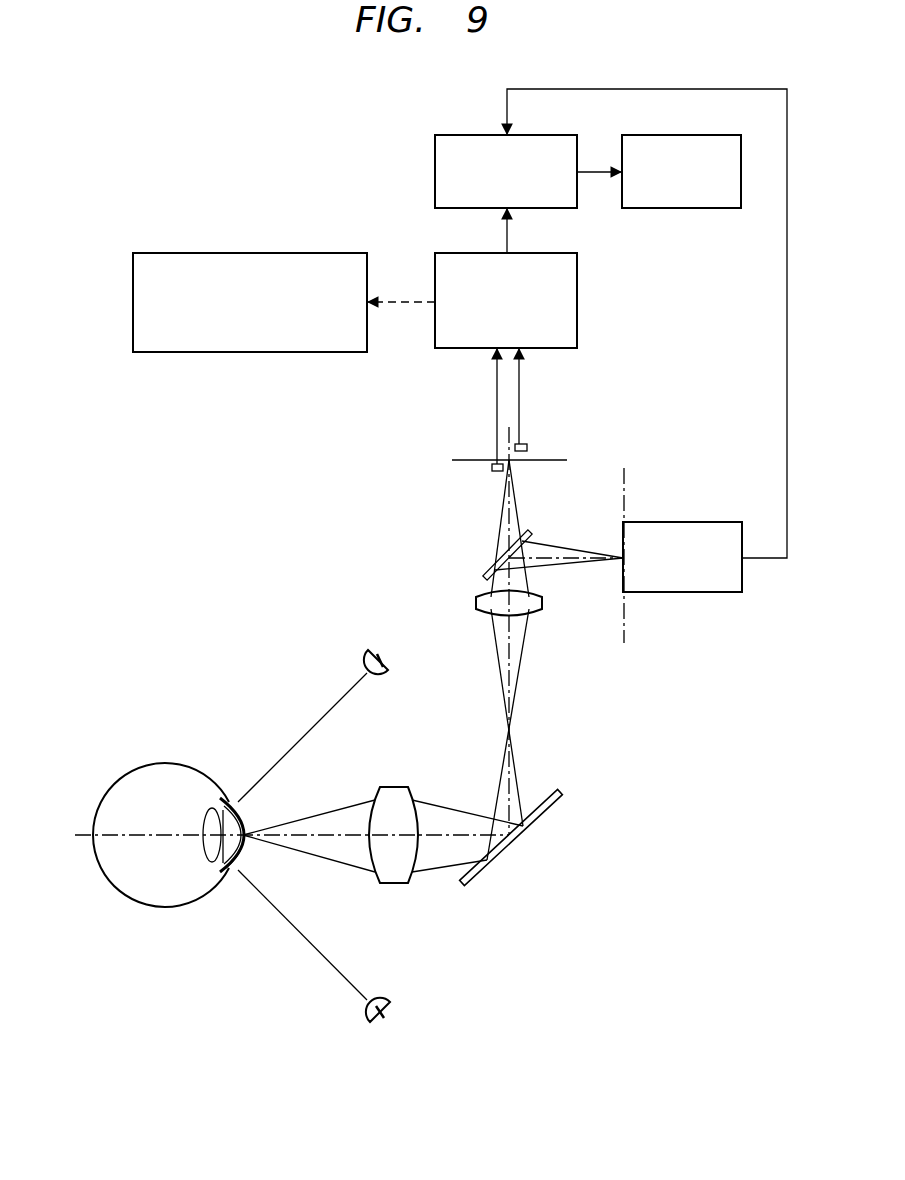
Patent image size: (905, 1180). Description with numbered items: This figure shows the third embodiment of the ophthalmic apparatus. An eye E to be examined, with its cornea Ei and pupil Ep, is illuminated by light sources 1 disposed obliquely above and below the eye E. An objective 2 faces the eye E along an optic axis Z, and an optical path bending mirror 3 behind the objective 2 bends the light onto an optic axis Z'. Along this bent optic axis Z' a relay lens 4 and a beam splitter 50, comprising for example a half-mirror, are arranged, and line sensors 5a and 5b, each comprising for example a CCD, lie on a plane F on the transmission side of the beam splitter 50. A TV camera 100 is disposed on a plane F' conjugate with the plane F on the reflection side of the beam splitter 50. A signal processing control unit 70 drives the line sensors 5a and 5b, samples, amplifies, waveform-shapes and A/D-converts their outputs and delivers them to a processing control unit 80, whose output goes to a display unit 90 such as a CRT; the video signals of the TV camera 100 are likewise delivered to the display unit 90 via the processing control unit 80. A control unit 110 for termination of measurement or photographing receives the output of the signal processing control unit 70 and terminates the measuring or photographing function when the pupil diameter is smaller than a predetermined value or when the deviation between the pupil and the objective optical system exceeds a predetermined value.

The light source 1 is at (388, 652).
The objective 2 is at (393, 790).
The optical path bending mirror 3 is at (526, 828).
The relay lens 4 is at (542, 603).
The line sensor 5a is at (492, 468).
The line sensor 5b is at (527, 447).
The beam splitter 50 is at (488, 575).
The signal processing control unit 70 is at (577, 278).
The processing control unit 80 is at (455, 135).
The display unit 90 is at (672, 135).
The TV camera 100 is at (695, 522).
The control unit for termination of measurement or photographing 110 is at (268, 253).
The eye to be examined E is at (157, 765).
The cornea of eye Ei is at (235, 800).
The pupil of eye Ep is at (237, 872).
The optic axis Z is at (324, 865).
The optic axis Z' is at (536, 631).
The plane F is at (518, 460).
The plane F' is at (626, 561).